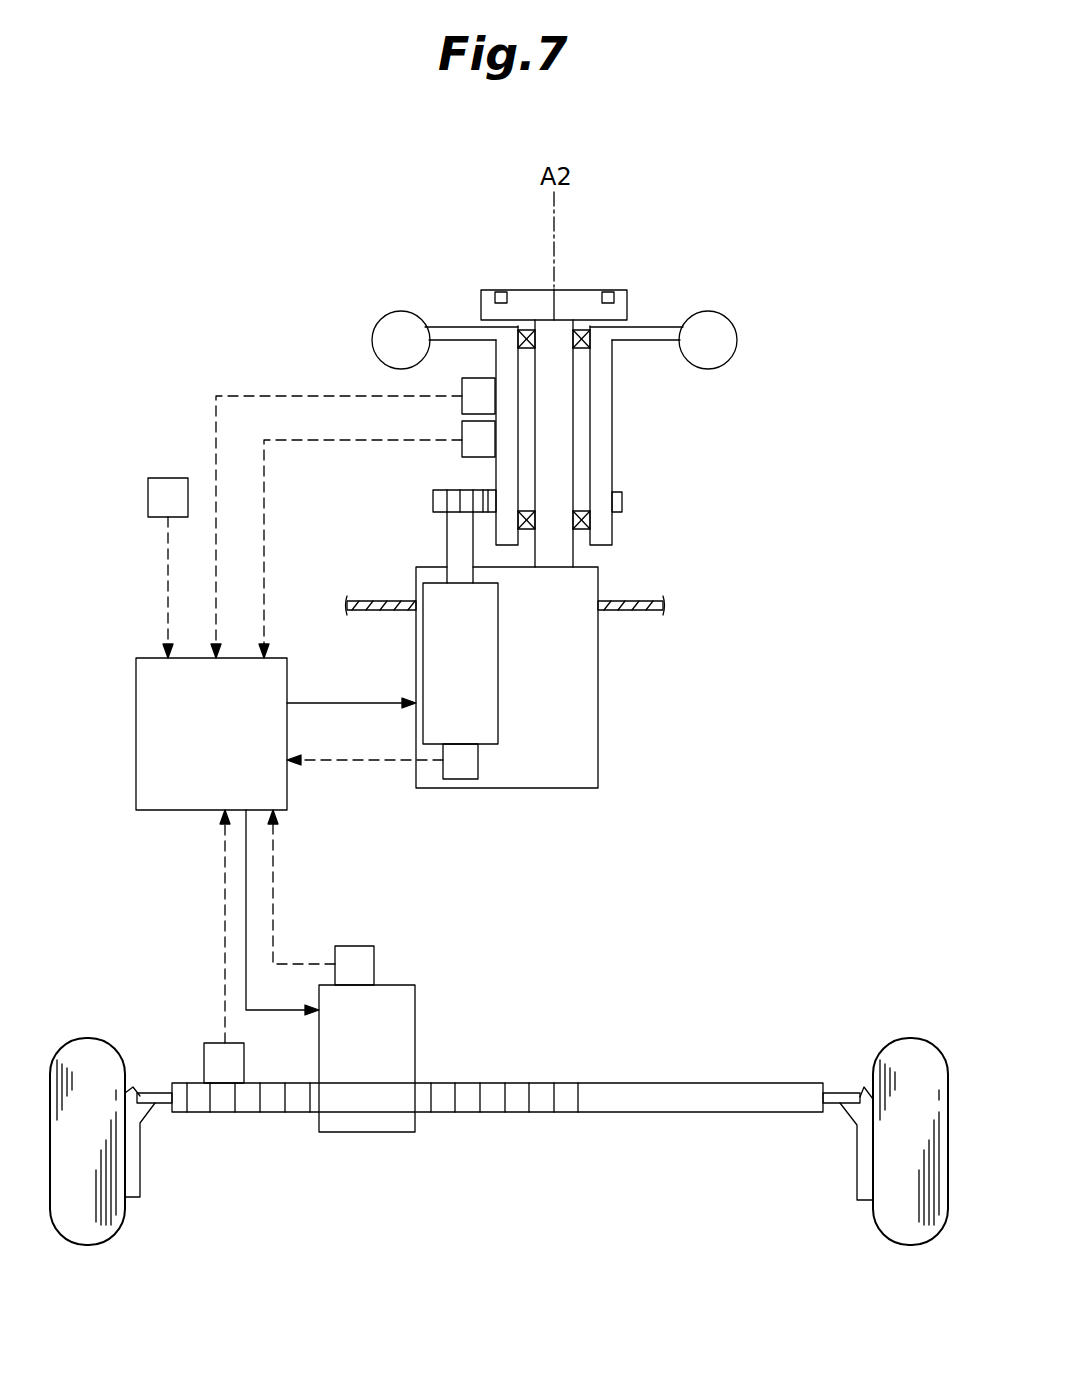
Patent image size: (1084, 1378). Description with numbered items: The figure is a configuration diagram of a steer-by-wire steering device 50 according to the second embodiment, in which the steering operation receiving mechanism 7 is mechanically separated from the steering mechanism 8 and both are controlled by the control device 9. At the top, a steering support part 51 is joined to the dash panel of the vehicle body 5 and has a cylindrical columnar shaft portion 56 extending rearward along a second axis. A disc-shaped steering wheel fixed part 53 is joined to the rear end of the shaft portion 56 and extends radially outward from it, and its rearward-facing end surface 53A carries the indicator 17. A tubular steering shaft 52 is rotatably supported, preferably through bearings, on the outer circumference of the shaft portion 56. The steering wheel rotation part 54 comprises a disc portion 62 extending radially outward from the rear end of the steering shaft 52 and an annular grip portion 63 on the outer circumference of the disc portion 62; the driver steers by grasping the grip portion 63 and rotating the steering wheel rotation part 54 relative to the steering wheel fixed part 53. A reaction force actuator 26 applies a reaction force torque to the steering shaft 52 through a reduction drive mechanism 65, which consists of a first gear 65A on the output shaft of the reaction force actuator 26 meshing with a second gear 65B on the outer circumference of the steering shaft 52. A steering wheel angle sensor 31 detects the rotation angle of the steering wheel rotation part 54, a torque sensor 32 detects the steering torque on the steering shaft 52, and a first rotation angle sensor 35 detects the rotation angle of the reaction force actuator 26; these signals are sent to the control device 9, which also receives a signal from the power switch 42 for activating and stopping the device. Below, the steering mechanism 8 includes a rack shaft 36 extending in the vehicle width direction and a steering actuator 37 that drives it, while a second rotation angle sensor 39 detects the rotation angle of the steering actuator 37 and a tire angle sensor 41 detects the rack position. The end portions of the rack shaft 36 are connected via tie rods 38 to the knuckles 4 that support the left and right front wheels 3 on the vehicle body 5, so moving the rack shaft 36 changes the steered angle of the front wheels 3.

The front wheel 3 is at (82, 1246).
The knuckle 4 is at (138, 1187).
The vehicle body 5 is at (638, 600).
The steering operation receiving mechanism 7 is at (707, 229).
The steering mechanism 8 is at (286, 1140).
The control device 9 is at (158, 811).
The indicator 17 is at (500, 289).
The reaction force actuator 26 is at (430, 667).
The steering wheel angle sensor 31 is at (460, 384).
The torque sensor 32 is at (462, 452).
The first rotation angle sensor 35 is at (459, 780).
The rack shaft 36 is at (568, 1113).
The steering actuator 37 is at (367, 1133).
The tie rod 38 is at (163, 1105).
The second rotation angle sensor 39 is at (375, 965).
The tire angle sensor 41 is at (203, 1062).
The power switch 42 is at (170, 477).
The steering device 50 is at (191, 300).
The steering support part 51 is at (599, 702).
The steering shaft 52 is at (608, 475).
The steering wheel fixed part 53 is at (521, 289).
The end surface 53A is at (580, 289).
The steering wheel rotation part 54 is at (738, 314).
The shaft portion 56 is at (568, 433).
The disc portion 62 is at (648, 342).
The grip portion 63 is at (719, 356).
The reduction drive mechanism 65 is at (435, 513).
The first gear 65A is at (428, 497).
The second gear 65B is at (623, 502).